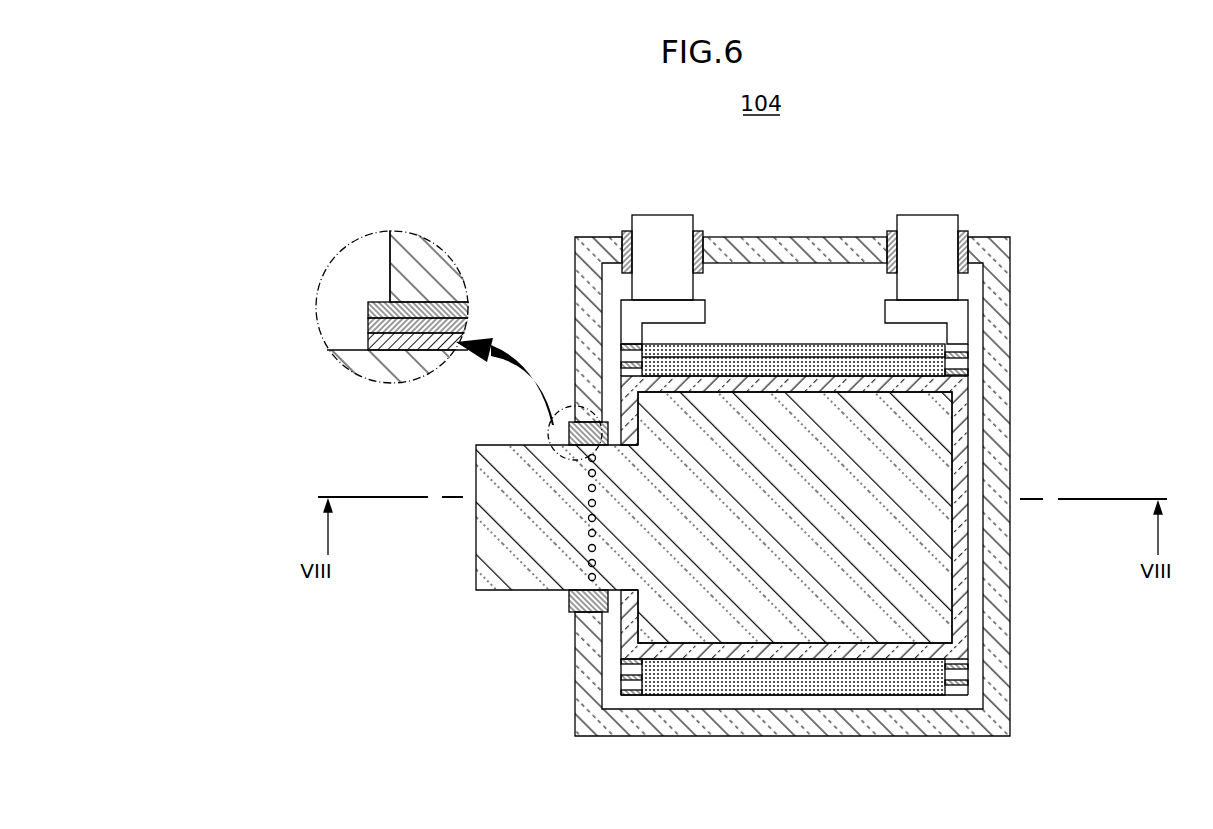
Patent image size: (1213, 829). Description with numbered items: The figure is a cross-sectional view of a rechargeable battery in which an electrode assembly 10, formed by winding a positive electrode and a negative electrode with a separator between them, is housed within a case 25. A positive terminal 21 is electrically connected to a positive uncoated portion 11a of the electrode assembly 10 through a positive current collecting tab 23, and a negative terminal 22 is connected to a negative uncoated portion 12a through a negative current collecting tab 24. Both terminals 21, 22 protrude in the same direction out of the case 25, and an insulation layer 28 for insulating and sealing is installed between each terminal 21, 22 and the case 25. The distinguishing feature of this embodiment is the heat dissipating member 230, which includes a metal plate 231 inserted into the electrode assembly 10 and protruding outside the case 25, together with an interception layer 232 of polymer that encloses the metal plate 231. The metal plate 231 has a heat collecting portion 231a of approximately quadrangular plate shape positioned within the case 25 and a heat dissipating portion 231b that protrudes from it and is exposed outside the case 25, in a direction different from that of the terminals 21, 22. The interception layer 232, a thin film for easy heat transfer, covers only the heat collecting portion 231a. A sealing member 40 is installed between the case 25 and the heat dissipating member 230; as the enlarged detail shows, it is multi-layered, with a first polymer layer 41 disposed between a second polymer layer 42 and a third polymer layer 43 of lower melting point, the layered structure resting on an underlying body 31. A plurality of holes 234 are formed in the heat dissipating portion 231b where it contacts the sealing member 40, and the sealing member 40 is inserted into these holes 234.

The electrode assembly 10 is at (820, 330).
The positive uncoated portion 11a is at (633, 343).
The negative uncoated portion 12a is at (950, 352).
The positive terminal 21 is at (660, 228).
The negative terminal 22 is at (920, 228).
The positive current collecting tab 23 is at (667, 307).
The negative current collecting tab 24 is at (937, 310).
The case 25 is at (420, 242).
The insulation layer 28 is at (700, 231).
The heat transfer body 31 is at (370, 372).
The sealing member 40 is at (411, 421).
The first polymer layer 41 is at (372, 325).
The second polymer layer 42 is at (372, 342).
The third polymer layer 43 is at (372, 310).
The heat dissipating member 230 is at (767, 658).
The metal plate 231 is at (838, 646).
The heat collecting portion 231a is at (672, 632).
The heat dissipating portion 231b is at (495, 572).
The interception layer 232 is at (922, 648).
The holes 234 is at (588, 540).